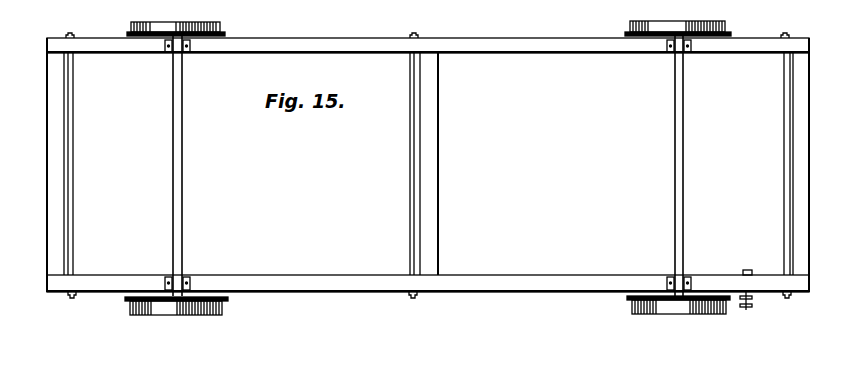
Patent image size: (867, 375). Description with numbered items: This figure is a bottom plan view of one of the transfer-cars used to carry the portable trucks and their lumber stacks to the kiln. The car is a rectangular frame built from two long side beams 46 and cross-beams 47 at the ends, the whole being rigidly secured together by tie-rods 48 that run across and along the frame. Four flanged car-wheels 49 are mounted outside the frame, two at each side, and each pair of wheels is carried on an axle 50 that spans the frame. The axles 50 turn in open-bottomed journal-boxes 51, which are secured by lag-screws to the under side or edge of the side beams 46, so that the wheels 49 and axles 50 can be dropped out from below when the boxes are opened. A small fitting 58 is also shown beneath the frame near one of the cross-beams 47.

The side beams 46 is at (489, 37).
The cross-beams 47 is at (47, 186).
The tie-rods 48 is at (78, 179).
The flanged car-wheels 49 is at (428, 176).
The axles 50 is at (188, 192).
The open-bottomed journal-boxes 51 is at (165, 55).
The adjusting bolt 58 is at (757, 295).